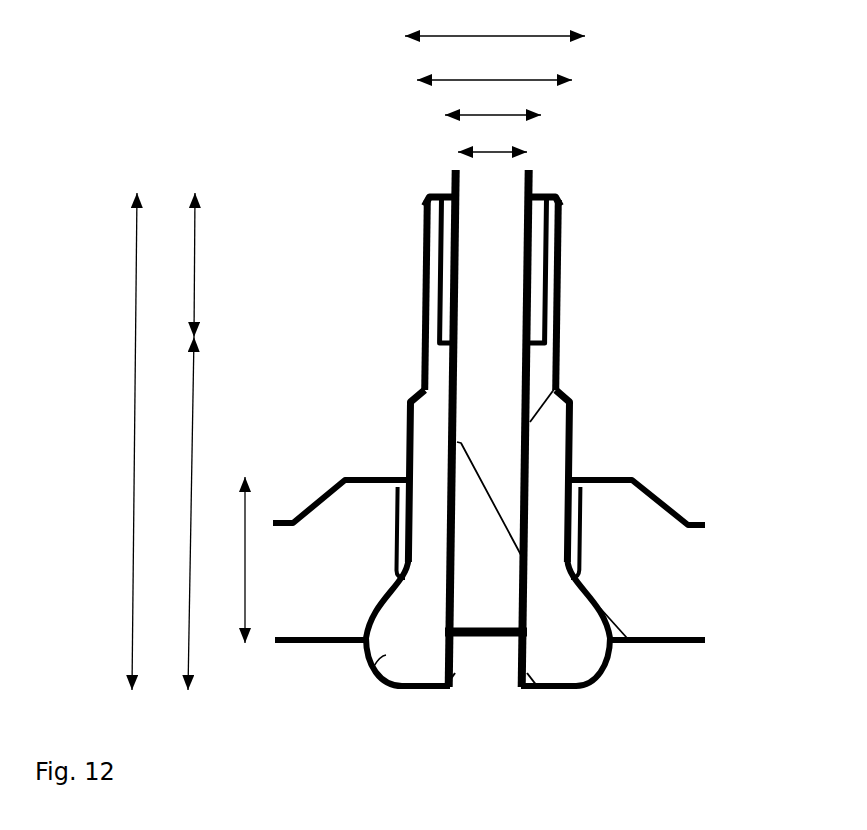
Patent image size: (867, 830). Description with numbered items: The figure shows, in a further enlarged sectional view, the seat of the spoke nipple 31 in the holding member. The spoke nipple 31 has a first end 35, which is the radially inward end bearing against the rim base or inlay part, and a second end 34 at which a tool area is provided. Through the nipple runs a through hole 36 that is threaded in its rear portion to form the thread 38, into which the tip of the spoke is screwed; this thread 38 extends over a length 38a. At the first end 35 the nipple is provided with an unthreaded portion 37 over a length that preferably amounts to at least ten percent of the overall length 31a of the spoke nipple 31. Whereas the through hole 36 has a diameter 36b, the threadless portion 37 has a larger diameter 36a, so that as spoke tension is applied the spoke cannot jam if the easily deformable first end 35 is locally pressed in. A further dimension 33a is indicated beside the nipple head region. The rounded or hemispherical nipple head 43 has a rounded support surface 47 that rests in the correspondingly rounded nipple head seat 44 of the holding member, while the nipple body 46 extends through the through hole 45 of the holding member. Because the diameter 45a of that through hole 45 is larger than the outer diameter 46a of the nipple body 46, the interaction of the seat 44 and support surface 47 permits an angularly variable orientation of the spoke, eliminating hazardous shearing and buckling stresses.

The spoke nipple 31 is at (602, 342).
The length of the spoke nipple 31a is at (130, 427).
The bulb section height 33a is at (237, 581).
The second end 34 is at (622, 695).
The first end 35 is at (567, 204).
The through hole 36 is at (490, 665).
The diameter of the threadless portion 36a is at (493, 110).
The diameter of the through hole 36b is at (497, 147).
The unthreaded portion 37 is at (193, 281).
The thread 38 is at (536, 449).
The length of the thread 38a is at (190, 485).
The nipple head 43 is at (443, 572).
The nipple head seat 44 is at (607, 603).
The through hole in the holding member 45 is at (397, 467).
The diameter of the through hole in the holding member 45a is at (515, 33).
The nipple body 46 is at (562, 426).
The outer diameter of the nipple body 46a is at (500, 75).
The support surface 47 is at (592, 622).